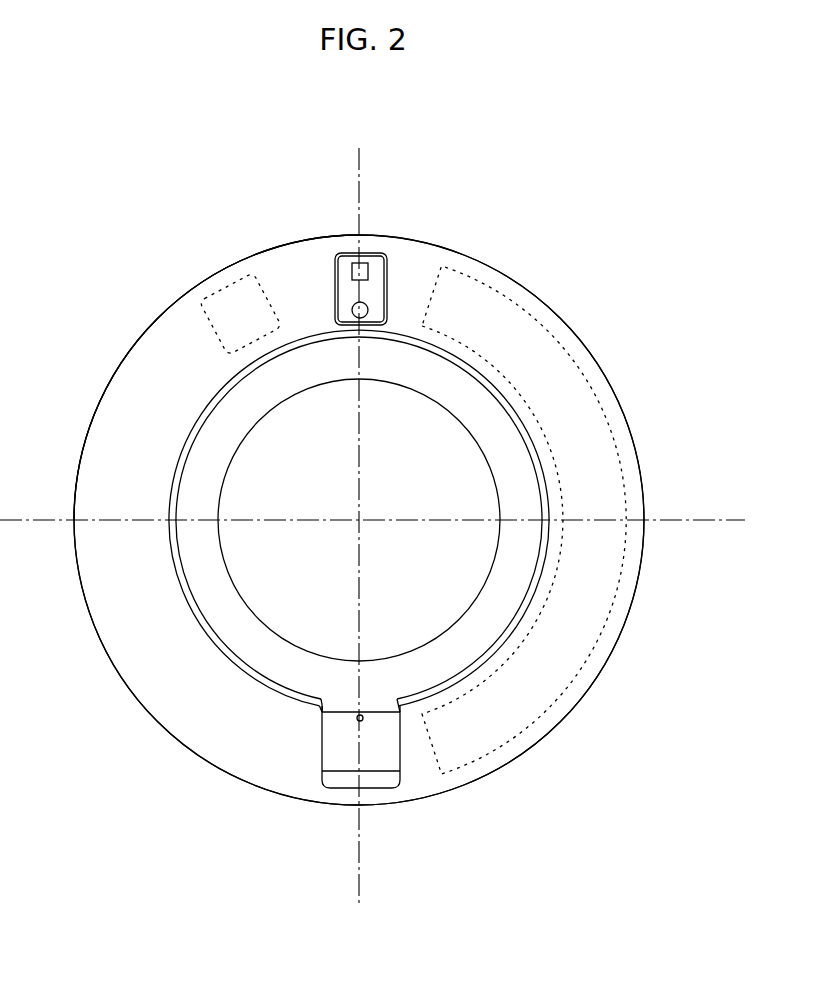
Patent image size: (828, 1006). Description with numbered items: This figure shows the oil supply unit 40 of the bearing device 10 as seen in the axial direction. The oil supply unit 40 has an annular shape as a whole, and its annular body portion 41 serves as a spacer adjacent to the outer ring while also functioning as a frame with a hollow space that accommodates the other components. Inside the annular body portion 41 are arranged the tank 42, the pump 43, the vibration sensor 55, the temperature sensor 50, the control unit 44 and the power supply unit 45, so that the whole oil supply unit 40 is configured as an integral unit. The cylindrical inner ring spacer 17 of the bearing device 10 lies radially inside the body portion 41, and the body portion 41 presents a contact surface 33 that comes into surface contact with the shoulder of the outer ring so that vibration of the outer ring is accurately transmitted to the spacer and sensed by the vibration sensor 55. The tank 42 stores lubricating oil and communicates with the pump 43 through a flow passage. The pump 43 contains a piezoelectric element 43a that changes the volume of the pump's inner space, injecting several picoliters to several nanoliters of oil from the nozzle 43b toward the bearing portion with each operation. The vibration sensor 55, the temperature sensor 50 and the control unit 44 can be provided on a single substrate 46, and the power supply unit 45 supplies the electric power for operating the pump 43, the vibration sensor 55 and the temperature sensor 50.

The bearing device 10 is at (602, 344).
The inner ring spacer 17 is at (232, 608).
The contact surface 33 is at (133, 388).
The oil supply unit 40 is at (144, 725).
The body portion 41 is at (162, 310).
The tank 42 is at (555, 712).
The pump 43 is at (337, 773).
The piezoelectric element 43a is at (390, 755).
The nozzle 43b is at (363, 716).
The control unit 44 is at (388, 290).
The power supply unit 45 is at (225, 278).
The substrate 46 is at (352, 310).
The temperature sensor 50 is at (347, 288).
The vibration sensor 55 is at (369, 271).